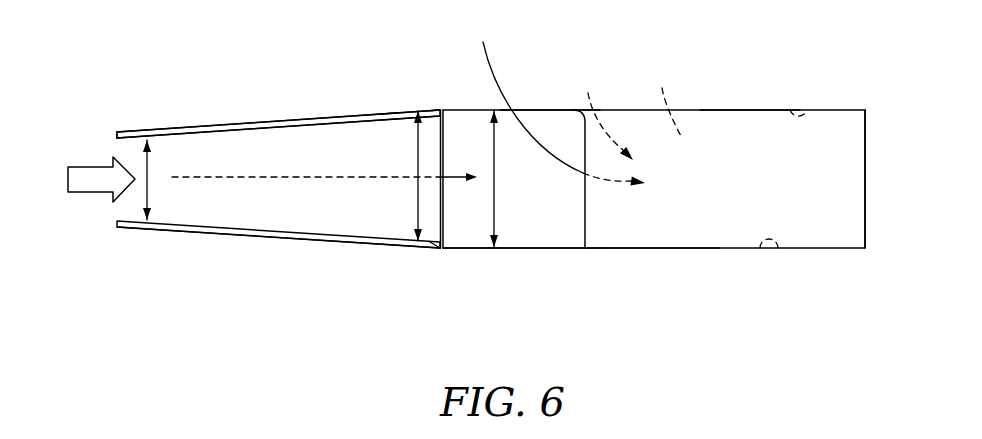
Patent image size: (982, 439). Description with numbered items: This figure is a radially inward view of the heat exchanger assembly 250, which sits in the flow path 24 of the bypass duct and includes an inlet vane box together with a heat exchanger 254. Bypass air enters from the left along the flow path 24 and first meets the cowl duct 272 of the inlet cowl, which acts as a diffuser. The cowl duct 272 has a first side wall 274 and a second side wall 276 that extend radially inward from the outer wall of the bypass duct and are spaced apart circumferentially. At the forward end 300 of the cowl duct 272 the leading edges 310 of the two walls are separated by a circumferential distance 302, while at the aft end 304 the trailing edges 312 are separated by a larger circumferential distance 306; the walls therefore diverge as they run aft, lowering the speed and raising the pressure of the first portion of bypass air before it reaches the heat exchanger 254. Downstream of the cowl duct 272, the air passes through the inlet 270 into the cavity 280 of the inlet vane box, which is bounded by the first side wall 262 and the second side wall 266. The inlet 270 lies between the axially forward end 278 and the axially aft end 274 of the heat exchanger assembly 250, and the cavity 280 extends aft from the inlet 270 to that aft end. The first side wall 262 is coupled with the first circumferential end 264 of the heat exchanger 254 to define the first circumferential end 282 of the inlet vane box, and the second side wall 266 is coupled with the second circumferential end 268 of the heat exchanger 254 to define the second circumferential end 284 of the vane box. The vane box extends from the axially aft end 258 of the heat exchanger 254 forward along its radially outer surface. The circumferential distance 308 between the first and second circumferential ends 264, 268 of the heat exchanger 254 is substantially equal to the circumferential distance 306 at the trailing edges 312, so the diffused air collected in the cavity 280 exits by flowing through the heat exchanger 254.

The flow path 24 is at (92, 180).
The heat exchanger assembly 250 is at (390, 98).
The heat exchanger 254 is at (662, 100).
The axially aft end of the heat exchanger 258 is at (867, 213).
The first side wall 262 is at (638, 249).
The first circumferential end of the heat exchanger 264 is at (778, 250).
The second side wall 266 is at (552, 110).
The second circumferential end of the heat exchanger 268 is at (805, 112).
The inlet 270 is at (270, 121).
The cowl duct 272 is at (338, 161).
The first side wall of the cowl duct 274 is at (230, 234).
The second side wall of the cowl duct 276 is at (167, 129).
The axially forward end of the heat exchanger assembly 278 is at (440, 128).
The cavity 280 is at (554, 100).
The first circumferential end of the inlet vane box 282 is at (534, 249).
The second circumferential end of the inlet vane box 284 is at (750, 110).
The forward end of the cowl duct 300 is at (125, 208).
The circumferential distance 302 is at (150, 178).
The aft end of the cowl duct 304 is at (430, 111).
The circumferential distance 306 is at (415, 192).
The circumferential distance 308 is at (493, 197).
The leading edges 310 is at (113, 133).
The trailing edges 312 is at (422, 258).